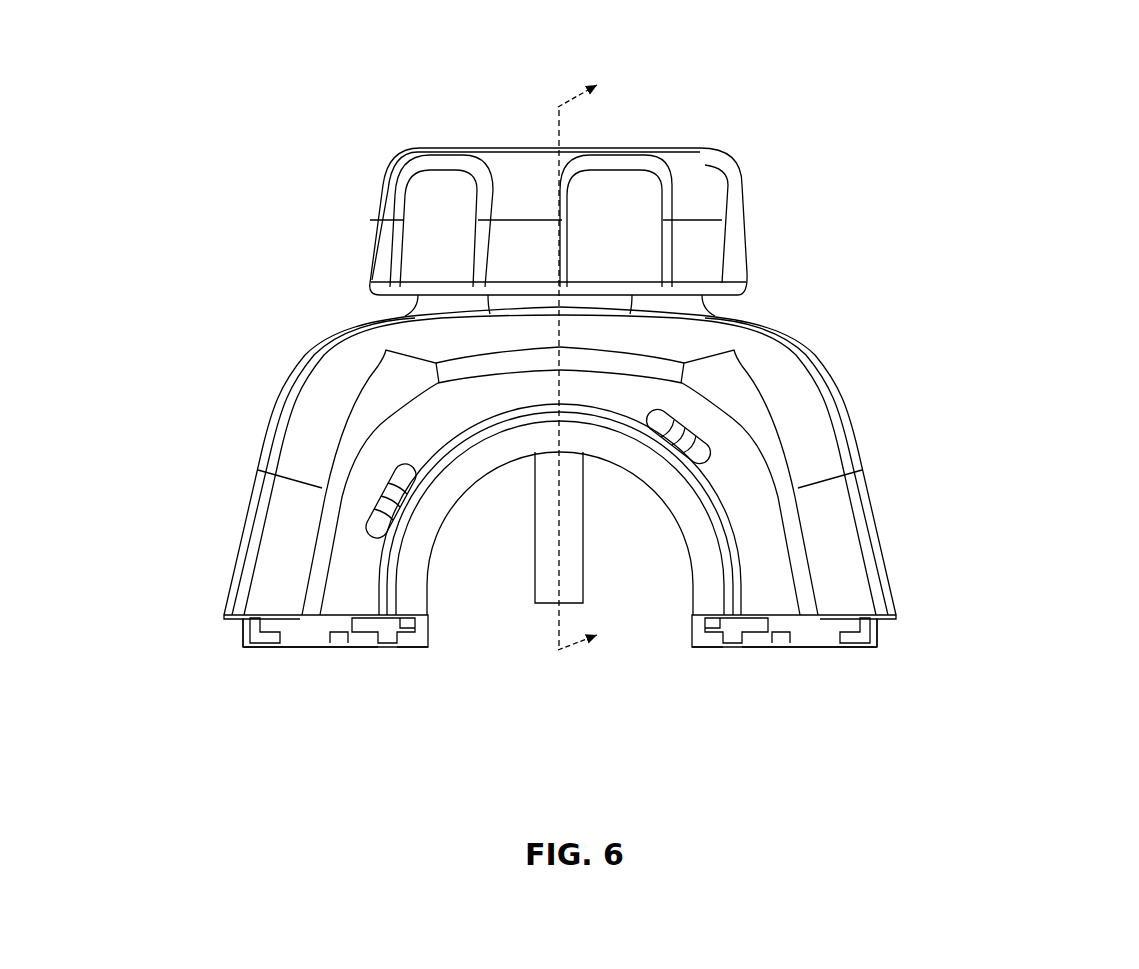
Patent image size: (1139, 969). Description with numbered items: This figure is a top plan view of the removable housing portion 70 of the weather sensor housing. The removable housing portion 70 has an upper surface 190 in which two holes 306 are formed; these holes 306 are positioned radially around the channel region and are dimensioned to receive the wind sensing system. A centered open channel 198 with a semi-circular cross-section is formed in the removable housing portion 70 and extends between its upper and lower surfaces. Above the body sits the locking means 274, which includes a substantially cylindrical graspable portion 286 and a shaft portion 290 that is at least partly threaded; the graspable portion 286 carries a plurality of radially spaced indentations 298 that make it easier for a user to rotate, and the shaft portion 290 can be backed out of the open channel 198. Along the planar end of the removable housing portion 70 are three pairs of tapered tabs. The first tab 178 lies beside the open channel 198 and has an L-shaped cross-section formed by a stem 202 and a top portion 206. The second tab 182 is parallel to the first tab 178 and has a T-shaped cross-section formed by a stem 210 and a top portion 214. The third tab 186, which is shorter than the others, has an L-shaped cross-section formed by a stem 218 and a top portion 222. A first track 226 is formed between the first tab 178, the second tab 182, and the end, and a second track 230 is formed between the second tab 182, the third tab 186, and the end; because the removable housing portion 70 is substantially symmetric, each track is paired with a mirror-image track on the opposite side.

The removable housing portion 70 is at (1000, 288).
The locking means 274 is at (493, 88).
The radially spaced indentations 298 is at (620, 200).
The graspable portion 286 is at (688, 183).
The upper surface 190 is at (847, 553).
The open channel 198 is at (629, 630).
The shaft portion 290 is at (583, 521).
The holes 306 is at (388, 480).
The first tab 178 is at (436, 651).
The second track 230 is at (300, 637).
The stem 218 is at (243, 633).
The top portion 222 is at (262, 654).
The third tab 186 is at (268, 651).
The stem 210 is at (350, 624).
The second tab 182 is at (340, 651).
The stem 202 is at (428, 628).
The first track 226 is at (400, 625).
The top portion 214 is at (357, 648).
The top portion 206 is at (413, 648).